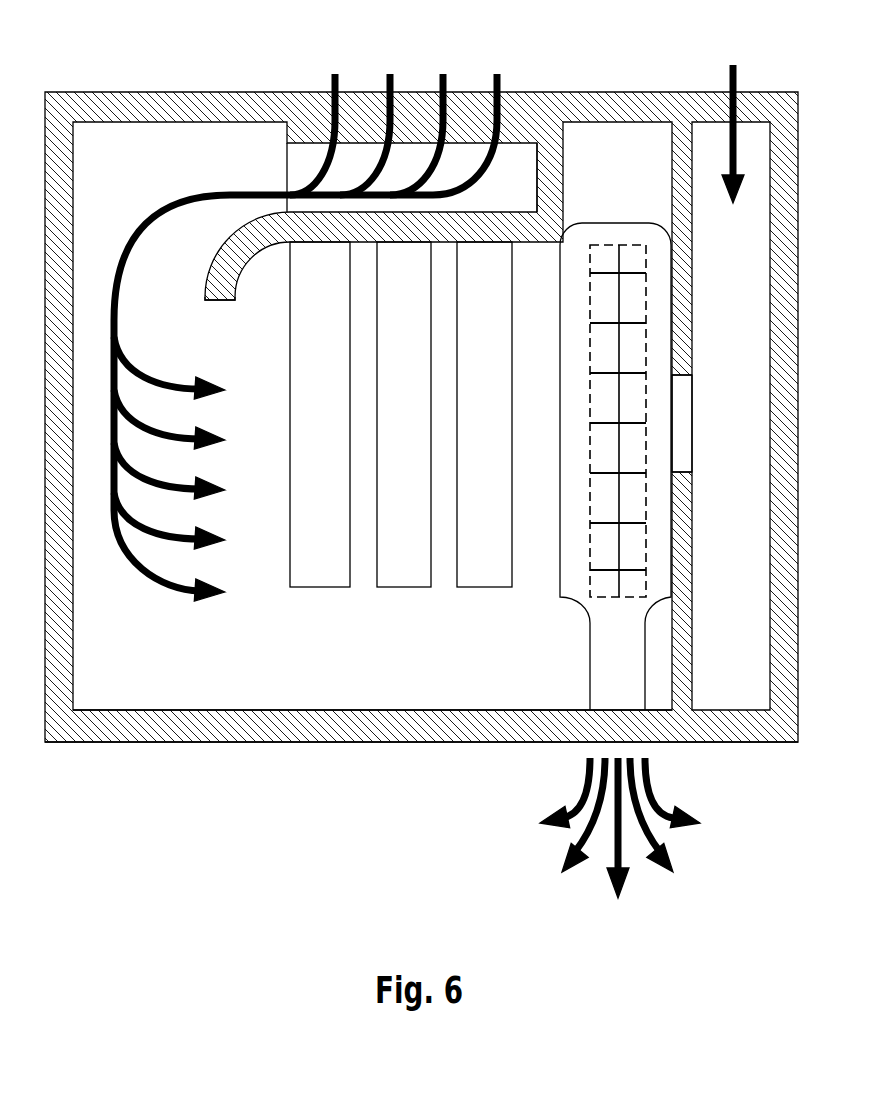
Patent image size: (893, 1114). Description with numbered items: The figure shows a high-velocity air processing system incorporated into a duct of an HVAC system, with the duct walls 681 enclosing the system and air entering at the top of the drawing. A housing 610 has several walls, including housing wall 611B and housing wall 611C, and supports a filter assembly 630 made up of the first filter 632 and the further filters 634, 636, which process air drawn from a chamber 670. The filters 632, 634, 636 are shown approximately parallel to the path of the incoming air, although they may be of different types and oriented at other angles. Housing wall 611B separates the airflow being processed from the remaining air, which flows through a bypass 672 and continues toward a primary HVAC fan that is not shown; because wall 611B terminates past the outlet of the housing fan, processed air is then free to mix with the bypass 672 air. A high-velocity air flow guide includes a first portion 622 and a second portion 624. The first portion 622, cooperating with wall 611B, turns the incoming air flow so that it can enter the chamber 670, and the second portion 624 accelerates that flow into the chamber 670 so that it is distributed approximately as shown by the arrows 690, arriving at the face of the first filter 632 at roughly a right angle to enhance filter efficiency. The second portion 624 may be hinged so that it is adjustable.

The housing 610 is at (421, 449).
The housing wall 611B is at (690, 510).
The housing wall 611C is at (360, 743).
The first portion 622 is at (305, 210).
The second portion 624 is at (210, 267).
The heat exchanger core 630 is at (631, 209).
The first filter 632 is at (322, 587).
The filter 634 is at (406, 587).
The filter 636 is at (492, 587).
The chamber 670 is at (195, 576).
The bypass 672 is at (750, 307).
The duct walls 681 is at (73, 630).
The arrows 690 is at (148, 522).